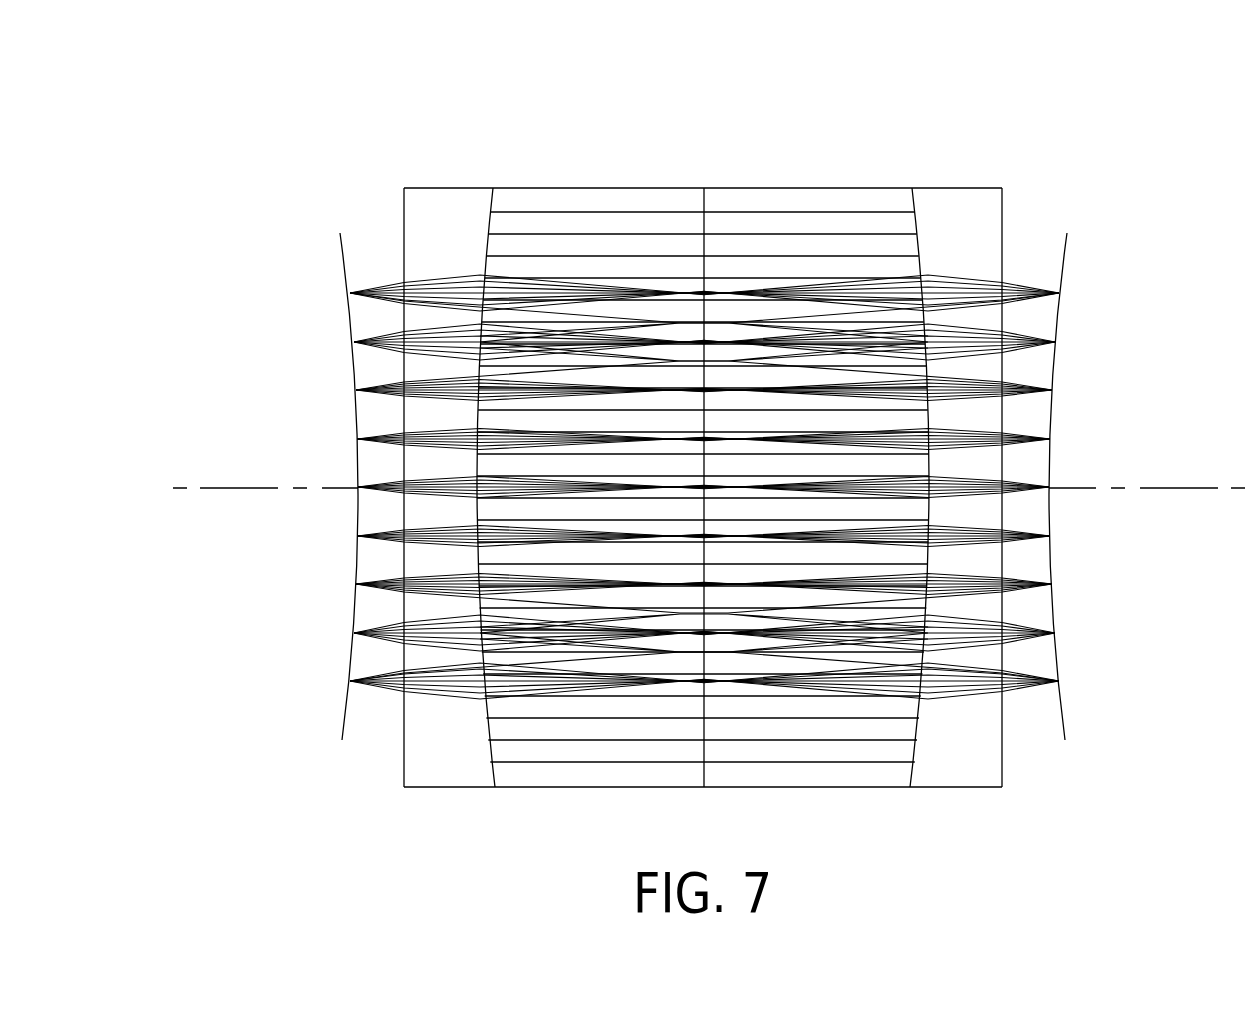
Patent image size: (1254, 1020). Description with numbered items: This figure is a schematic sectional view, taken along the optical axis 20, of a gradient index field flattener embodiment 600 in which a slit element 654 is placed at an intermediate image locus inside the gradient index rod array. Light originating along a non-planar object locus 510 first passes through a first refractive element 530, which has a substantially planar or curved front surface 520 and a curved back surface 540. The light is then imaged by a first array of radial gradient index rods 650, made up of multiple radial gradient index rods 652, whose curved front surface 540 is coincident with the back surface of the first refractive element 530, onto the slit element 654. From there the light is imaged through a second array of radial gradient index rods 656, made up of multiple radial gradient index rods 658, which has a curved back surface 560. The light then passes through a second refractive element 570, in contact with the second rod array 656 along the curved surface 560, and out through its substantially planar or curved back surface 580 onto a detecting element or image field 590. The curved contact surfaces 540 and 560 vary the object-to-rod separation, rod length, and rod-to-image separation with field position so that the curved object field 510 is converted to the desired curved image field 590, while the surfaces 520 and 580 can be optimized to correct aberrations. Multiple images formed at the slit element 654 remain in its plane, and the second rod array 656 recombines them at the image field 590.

The gradient index field flattener embodiment 600 is at (258, 104).
The non-planar object locus 510 is at (342, 265).
The front surface of first refractive element 520 is at (402, 222).
The first refractive element 530 is at (442, 197).
The curved back surface of first refractive element 540 is at (493, 197).
The first array of radial gradient index rods 650 is at (582, 187).
The radial gradient index rods of first array 652 is at (655, 198).
The slit element 654 is at (704, 197).
The second array of radial gradient index rods 656 is at (755, 188).
The radial gradient index rods of second array 658 is at (825, 200).
The curved back surface of second rod array 560 is at (913, 197).
The second refractive element 570 is at (967, 202).
The back surface of second refractive element 580 is at (1002, 220).
The detecting element or image field 590 is at (1065, 265).
The optical axis 20 is at (185, 488).